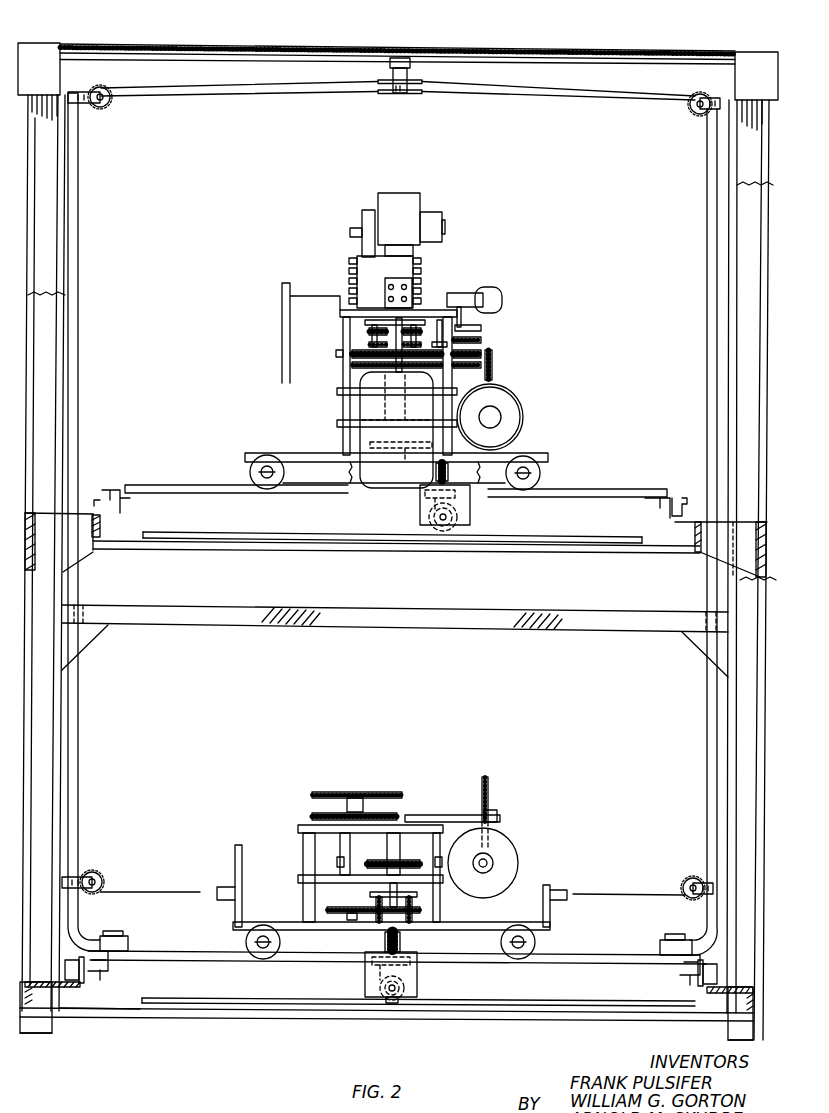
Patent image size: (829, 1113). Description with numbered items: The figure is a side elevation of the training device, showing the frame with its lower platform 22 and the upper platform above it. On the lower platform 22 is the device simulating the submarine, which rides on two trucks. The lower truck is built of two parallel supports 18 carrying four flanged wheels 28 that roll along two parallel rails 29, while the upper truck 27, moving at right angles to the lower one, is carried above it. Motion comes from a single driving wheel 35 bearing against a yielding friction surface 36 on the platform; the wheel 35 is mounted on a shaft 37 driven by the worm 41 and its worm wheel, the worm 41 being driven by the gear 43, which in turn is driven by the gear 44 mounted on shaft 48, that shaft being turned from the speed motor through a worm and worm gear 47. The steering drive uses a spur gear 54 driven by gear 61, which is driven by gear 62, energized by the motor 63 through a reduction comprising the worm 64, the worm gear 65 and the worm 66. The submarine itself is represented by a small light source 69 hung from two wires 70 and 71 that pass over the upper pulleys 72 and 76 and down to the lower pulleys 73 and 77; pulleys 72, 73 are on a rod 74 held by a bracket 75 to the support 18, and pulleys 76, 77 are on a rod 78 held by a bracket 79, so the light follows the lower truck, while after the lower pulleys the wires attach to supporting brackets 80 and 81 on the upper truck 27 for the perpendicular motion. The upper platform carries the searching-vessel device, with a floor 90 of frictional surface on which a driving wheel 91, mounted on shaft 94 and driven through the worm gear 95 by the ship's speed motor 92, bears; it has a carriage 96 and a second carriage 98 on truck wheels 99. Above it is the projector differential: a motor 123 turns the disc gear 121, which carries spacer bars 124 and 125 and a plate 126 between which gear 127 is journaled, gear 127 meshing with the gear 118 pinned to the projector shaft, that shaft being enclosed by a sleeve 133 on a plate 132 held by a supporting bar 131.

The parallel supports 18 is at (100, 968).
The lower platform 22 is at (132, 1013).
The upper truck 27 is at (287, 921).
The wheels 28 is at (80, 973).
The rails 29 is at (58, 992).
The driving wheel 35 is at (402, 998).
The friction surface 36 is at (583, 1000).
The shaft 37 is at (389, 1006).
The worm 41 is at (378, 978).
The gear 43 is at (366, 963).
The gear 44 is at (412, 955).
The worm gear 47 is at (420, 860).
The shaft 48 is at (363, 870).
The spur gear 54 is at (419, 913).
The gear 61 is at (335, 912).
The gear 62 is at (318, 815).
The motor 63 is at (512, 864).
The worm 64 is at (490, 859).
The worm gear 65 is at (488, 788).
The worm 66 is at (408, 816).
The light source 69 is at (402, 72).
The wire 70 is at (318, 80).
The wire 71 is at (477, 82).
The pulley 72 is at (105, 90).
The pulley 73 is at (96, 873).
The rod 74 is at (78, 232).
The bracket 75 is at (90, 937).
The pulley 76 is at (696, 113).
The pulley 77 is at (692, 877).
The rod 78 is at (737, 385).
The bracket 79 is at (663, 951).
The supporting bracket 80 is at (220, 887).
The supporting bracket 81 is at (551, 887).
The floor 90 is at (181, 537).
The driving wheel 91 is at (430, 533).
The ship's speed motor 92 is at (511, 405).
The shaft 94 is at (452, 516).
The worm gear 95 is at (424, 505).
The carriage 96 is at (625, 493).
The carriage 98 is at (498, 462).
The truck wheels 99 is at (267, 456).
The gear 118 is at (370, 332).
The disc gear 121 is at (337, 353).
The motor 123 is at (505, 297).
The spacer bar 124 is at (365, 345).
The spacer bar 125 is at (424, 340).
The plate 126 is at (372, 318).
The gear 127 is at (402, 350).
The supporting bar 131 is at (350, 352).
The plate 132 is at (437, 312).
The sleeve 133 is at (352, 262).